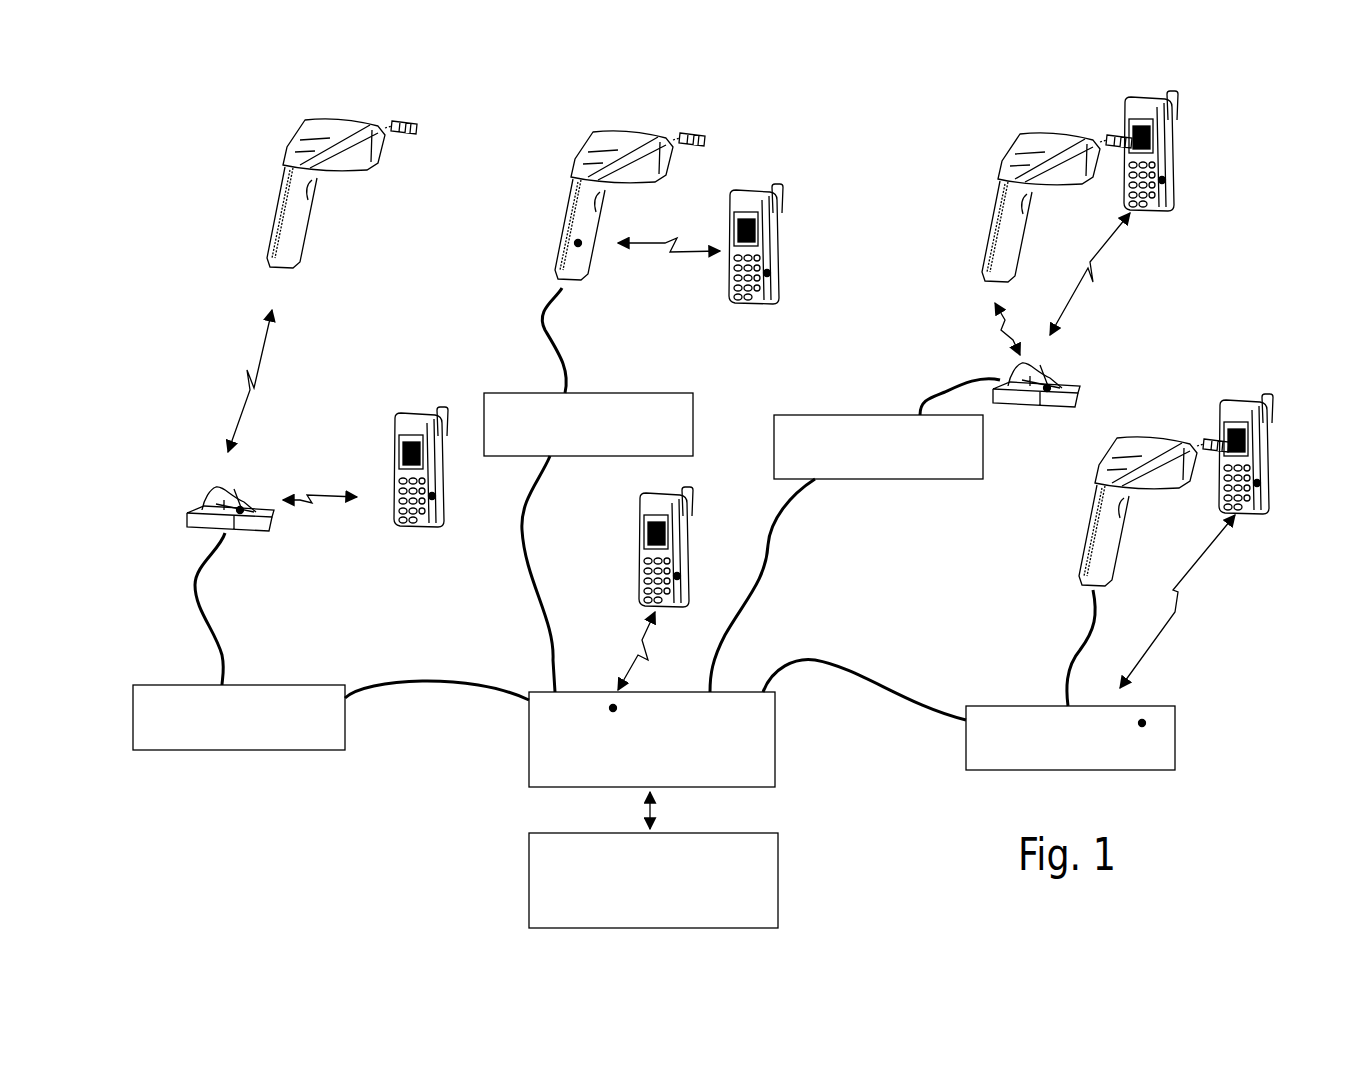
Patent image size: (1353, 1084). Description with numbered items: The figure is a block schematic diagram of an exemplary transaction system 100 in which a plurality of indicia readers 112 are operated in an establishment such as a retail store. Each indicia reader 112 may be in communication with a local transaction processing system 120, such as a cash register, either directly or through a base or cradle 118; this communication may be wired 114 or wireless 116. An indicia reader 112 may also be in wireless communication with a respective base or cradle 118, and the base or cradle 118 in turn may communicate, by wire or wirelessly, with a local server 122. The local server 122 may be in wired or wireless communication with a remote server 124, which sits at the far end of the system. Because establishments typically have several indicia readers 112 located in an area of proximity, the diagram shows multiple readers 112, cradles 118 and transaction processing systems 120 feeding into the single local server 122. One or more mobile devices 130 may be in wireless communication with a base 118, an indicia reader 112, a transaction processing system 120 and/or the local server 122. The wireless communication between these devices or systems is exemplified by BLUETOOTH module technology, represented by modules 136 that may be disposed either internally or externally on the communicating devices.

The transaction system 100 is at (884, 142).
The indicia reader 112 is at (748, 352).
The wired communication 114 is at (706, 451).
The wireless communication 116 is at (645, 489).
The base or cradle 118 is at (670, 466).
The local transaction processing system 120 is at (654, 575).
The local server 122 is at (777, 765).
The remote server 124 is at (780, 860).
The mobile device 130 is at (833, 349).
The BLUETOOTH module 136 is at (744, 564).